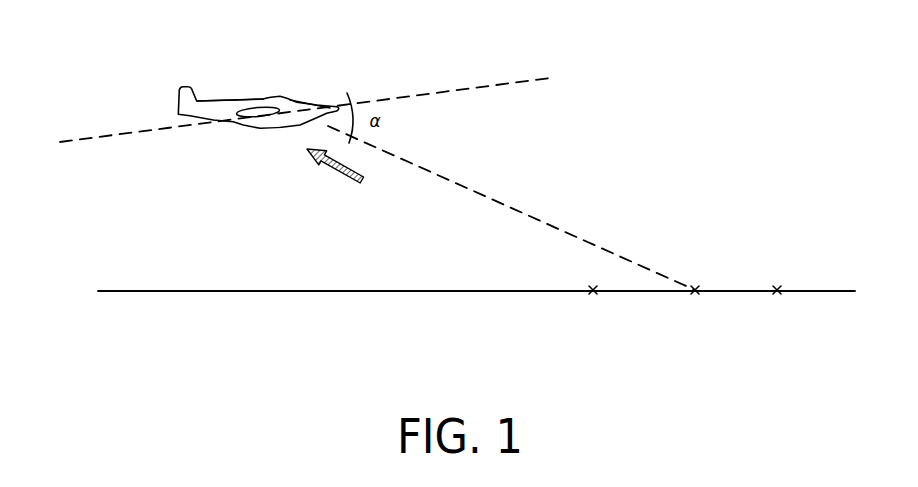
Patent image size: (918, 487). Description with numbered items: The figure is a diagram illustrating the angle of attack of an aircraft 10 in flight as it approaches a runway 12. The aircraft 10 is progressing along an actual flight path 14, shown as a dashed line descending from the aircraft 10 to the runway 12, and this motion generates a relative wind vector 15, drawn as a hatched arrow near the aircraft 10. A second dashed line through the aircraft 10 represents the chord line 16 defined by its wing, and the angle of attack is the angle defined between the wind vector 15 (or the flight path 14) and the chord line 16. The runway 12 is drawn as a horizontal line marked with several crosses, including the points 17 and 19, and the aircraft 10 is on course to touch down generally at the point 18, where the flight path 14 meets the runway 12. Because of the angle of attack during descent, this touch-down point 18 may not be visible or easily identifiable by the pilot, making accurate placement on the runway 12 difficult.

The aircraft 10 is at (247, 100).
The runway 12 is at (252, 292).
The actual flight path 14 is at (620, 253).
The relative wind vector 15 is at (333, 178).
The chord line 16 is at (487, 84).
The first ground point 17 is at (592, 296).
The touch-down point 18 is at (693, 296).
The third ground point 19 is at (775, 296).